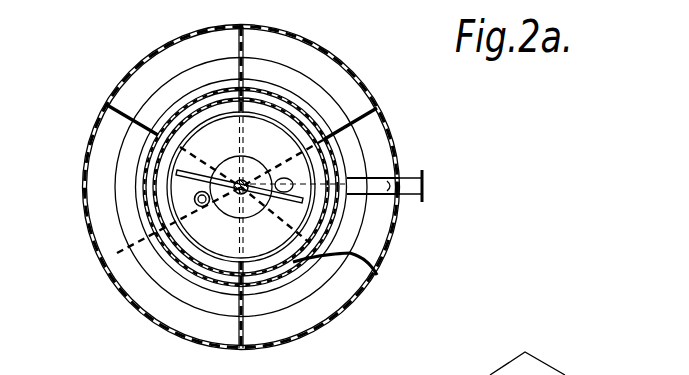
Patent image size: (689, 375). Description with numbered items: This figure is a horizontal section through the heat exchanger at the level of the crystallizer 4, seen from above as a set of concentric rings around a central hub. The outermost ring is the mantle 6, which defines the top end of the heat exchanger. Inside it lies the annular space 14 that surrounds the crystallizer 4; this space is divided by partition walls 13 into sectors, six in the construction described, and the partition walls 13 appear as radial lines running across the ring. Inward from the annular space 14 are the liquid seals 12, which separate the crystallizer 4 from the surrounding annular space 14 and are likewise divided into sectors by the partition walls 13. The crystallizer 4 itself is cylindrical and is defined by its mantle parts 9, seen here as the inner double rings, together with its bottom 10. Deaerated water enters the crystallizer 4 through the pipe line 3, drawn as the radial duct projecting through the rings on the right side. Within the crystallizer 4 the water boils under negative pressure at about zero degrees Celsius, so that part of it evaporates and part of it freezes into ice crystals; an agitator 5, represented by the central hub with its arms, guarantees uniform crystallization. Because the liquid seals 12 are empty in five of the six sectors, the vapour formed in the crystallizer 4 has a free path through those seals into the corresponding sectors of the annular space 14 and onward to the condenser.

The pipe line 3 is at (182, 207).
The crystallizer 4 is at (260, 133).
The agitator 5 is at (192, 185).
The mantle 6 is at (353, 72).
The mantle parts 9 is at (167, 176).
The bottom 10 is at (125, 302).
The liquid seals 12 is at (333, 227).
The partition walls 13 is at (342, 112).
The annular space 14 is at (340, 295).